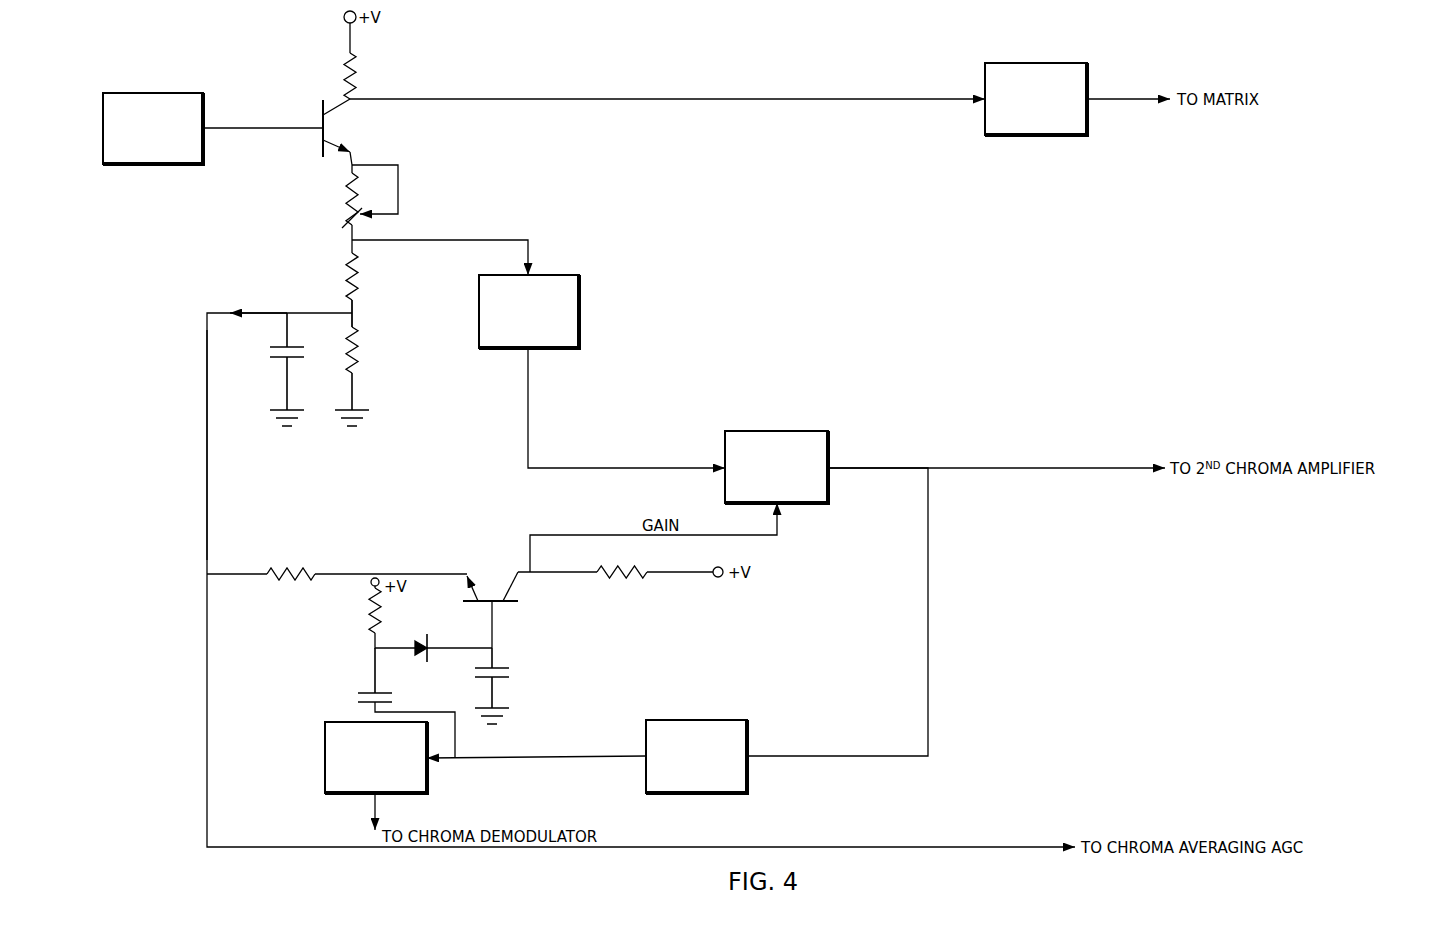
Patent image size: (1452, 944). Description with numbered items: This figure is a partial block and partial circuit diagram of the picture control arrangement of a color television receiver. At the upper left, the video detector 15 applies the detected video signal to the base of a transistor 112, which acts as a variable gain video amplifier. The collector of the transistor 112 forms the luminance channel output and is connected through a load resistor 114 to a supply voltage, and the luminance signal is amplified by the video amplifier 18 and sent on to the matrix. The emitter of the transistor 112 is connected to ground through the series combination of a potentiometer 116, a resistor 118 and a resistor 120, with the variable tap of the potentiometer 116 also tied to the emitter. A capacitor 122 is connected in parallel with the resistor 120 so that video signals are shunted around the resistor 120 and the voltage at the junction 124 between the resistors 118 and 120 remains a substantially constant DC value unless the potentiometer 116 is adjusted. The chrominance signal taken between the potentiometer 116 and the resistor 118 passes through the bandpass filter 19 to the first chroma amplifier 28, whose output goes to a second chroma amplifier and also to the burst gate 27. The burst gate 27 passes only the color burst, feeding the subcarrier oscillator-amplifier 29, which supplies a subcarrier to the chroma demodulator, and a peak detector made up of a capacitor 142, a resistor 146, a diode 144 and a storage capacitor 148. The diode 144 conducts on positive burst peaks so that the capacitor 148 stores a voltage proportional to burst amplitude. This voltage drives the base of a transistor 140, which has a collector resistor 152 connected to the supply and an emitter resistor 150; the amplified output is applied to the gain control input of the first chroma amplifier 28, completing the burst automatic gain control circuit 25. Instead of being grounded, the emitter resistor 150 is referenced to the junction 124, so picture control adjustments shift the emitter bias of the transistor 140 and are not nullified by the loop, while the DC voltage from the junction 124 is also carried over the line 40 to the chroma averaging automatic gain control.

The video detector 15 is at (163, 93).
The video amplifier 18 is at (1045, 63).
The bandpass filter 19 is at (554, 258).
The burst automatic gain control circuit 25 is at (793, 614).
The burst gate 27 is at (708, 720).
The first chroma amplifier 28 is at (773, 431).
The subcarrier oscillator-amplifier 29 is at (427, 796).
The line 40 is at (212, 422).
The transistor 112 is at (318, 146).
The load resistor 114 is at (360, 62).
The potentiometer 116 is at (345, 206).
The resistor 118 is at (348, 280).
The resistor 120 is at (360, 360).
The capacitor 122 is at (280, 347).
The junction 124 is at (357, 317).
The transistor 140 is at (496, 592).
The capacitor 142 is at (366, 686).
The diode 144 is at (424, 656).
The resistor 146 is at (366, 626).
The storage capacitor 148 is at (508, 682).
The emitter resistor 150 is at (290, 566).
The collector resistor 152 is at (625, 580).